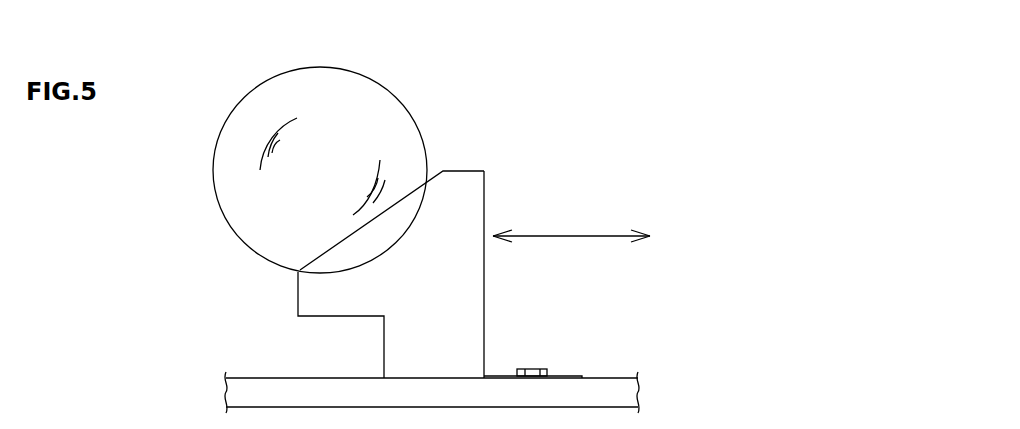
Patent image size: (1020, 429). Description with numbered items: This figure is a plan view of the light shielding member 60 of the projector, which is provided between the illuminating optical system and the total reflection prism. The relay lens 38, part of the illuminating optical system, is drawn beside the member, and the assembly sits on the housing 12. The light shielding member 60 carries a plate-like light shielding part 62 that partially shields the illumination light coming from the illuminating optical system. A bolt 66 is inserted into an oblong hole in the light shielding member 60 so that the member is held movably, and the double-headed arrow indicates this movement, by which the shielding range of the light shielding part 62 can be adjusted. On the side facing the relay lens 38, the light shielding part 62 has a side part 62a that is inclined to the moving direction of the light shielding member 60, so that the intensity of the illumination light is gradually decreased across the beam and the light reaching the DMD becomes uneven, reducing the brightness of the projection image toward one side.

The housing 12 is at (249, 378).
The relay lens 38 is at (399, 93).
The light shielding member 60 is at (581, 247).
The light shielding part 62 is at (485, 272).
The side part 62a is at (436, 168).
The bolt 66 is at (531, 368).